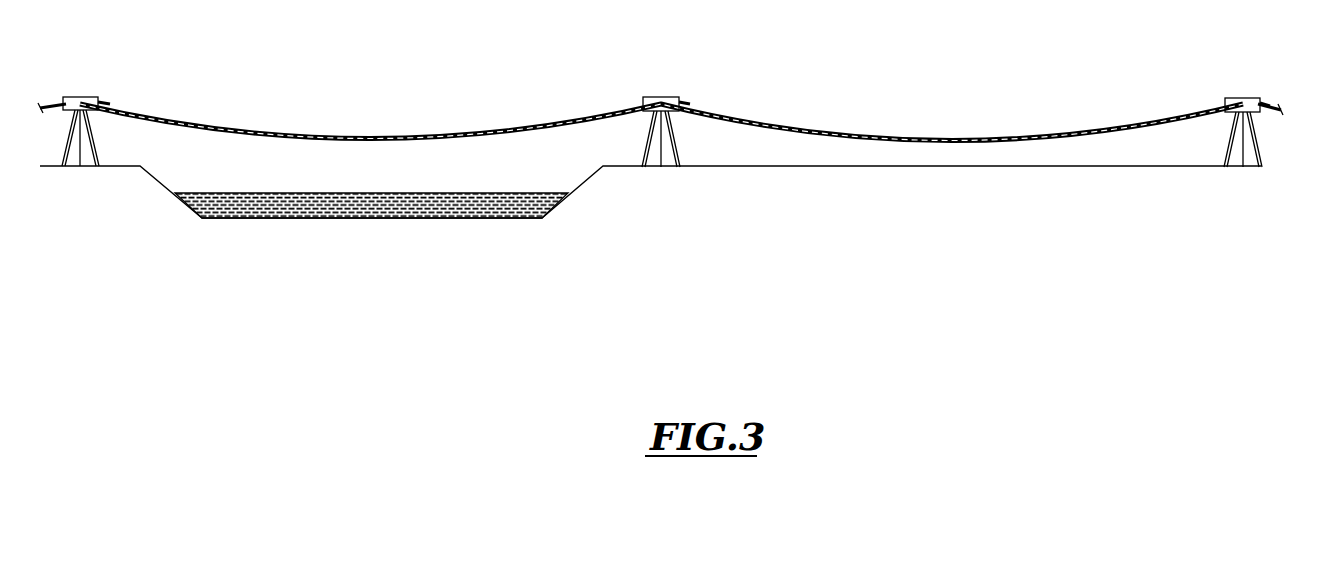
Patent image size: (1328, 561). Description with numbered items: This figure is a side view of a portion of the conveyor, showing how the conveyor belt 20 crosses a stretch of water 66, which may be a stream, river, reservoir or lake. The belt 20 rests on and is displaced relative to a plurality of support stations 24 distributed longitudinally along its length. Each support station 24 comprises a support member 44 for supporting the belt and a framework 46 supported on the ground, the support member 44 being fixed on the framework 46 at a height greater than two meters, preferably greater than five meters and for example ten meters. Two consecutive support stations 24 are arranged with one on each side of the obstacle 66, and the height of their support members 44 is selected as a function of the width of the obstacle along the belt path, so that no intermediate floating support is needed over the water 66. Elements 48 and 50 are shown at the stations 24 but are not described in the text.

The conveyor belt 20 is at (256, 131).
The support station 24 is at (60, 142).
The support member 44 is at (106, 98).
The framework 46 is at (102, 155).
The cable saddle 48 is at (63, 97).
The tower brace 50 is at (94, 133).
The stretch of water 66 is at (483, 207).